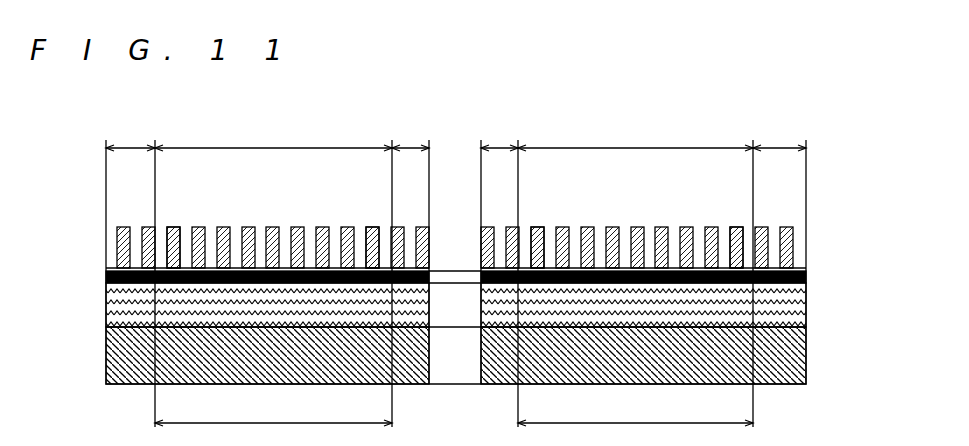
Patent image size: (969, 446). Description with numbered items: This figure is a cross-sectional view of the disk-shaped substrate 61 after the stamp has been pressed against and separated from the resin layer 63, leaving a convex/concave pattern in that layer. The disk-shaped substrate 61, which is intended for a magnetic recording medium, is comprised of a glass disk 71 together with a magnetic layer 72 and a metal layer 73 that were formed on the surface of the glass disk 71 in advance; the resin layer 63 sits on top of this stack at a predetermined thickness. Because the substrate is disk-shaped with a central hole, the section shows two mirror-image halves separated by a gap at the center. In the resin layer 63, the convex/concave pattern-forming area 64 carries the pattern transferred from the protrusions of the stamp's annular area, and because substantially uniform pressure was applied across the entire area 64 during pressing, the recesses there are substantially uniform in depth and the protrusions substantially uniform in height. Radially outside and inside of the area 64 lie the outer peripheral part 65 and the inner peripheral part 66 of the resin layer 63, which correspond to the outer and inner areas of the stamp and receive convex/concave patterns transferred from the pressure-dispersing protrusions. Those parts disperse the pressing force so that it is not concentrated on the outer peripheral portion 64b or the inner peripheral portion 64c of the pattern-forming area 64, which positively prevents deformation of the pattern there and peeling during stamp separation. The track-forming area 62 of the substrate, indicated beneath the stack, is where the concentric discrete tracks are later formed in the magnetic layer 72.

The disk-shaped substrate 61 is at (502, 306).
The track-forming area 62 is at (454, 414).
The resin layer 63 is at (793, 247).
The convex/concave pattern-forming area 64 is at (454, 277).
The outer peripheral portion 64b is at (177, 209).
The inner peripheral portion 64c is at (372, 209).
The outer peripheral part 65 is at (456, 197).
The inner peripheral part 66 is at (455, 197).
The glass disk 71 is at (806, 372).
The magnetic layer 72 is at (806, 303).
The metal layer 73 is at (806, 277).